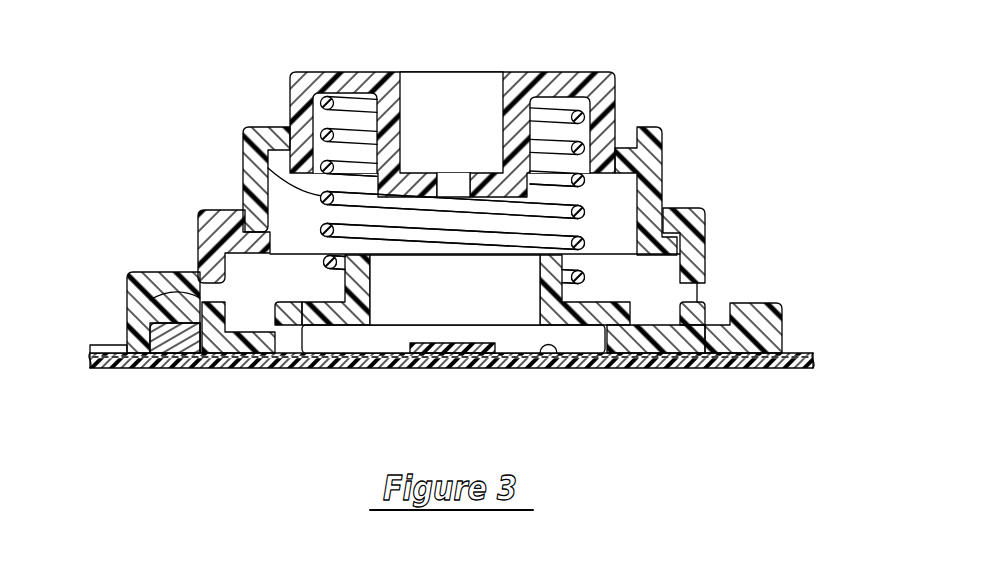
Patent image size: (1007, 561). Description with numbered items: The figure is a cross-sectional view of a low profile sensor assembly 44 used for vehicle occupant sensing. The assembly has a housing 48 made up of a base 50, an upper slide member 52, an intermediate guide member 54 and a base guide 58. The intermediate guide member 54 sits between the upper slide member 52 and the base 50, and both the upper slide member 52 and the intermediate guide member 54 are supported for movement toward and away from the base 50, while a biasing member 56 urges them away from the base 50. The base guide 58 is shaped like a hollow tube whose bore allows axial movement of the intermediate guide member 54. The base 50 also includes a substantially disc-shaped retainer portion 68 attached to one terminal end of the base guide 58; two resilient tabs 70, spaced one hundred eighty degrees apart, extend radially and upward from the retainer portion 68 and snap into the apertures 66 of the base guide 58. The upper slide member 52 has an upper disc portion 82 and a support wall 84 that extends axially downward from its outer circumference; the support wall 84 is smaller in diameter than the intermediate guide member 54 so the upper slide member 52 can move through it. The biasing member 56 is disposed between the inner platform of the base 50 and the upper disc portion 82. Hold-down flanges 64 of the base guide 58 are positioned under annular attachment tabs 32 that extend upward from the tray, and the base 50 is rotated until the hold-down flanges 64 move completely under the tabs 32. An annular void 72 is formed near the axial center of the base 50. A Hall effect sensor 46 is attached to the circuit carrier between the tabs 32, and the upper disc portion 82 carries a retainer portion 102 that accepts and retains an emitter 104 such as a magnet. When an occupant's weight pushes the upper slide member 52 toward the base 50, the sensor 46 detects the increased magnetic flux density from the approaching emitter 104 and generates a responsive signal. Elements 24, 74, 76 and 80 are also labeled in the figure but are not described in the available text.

The fastener 24 is at (547, 347).
The annular attachment tab 32 is at (758, 295).
The low profile sensor assembly 44 is at (712, 122).
The sensor 46 is at (446, 350).
The housing 48 is at (714, 211).
The base 50 is at (697, 268).
The upper slide member 52 is at (605, 103).
The intermediate guide member 54 is at (660, 150).
The biasing member 56 is at (248, 150).
The base guide 58 is at (200, 247).
The hold-down flange 64 is at (127, 343).
The aperture 66 is at (168, 297).
The retainer portion 68 is at (647, 347).
The resilient tab 70 is at (703, 308).
The annular void 72 is at (338, 343).
The groove 74 is at (286, 302).
The tab 76 is at (243, 327).
The cup 80 is at (363, 272).
The upper disc portion 82 is at (548, 83).
The support wall 84 is at (306, 101).
The retainer portion 102 is at (382, 100).
The emitter 104 is at (447, 110).